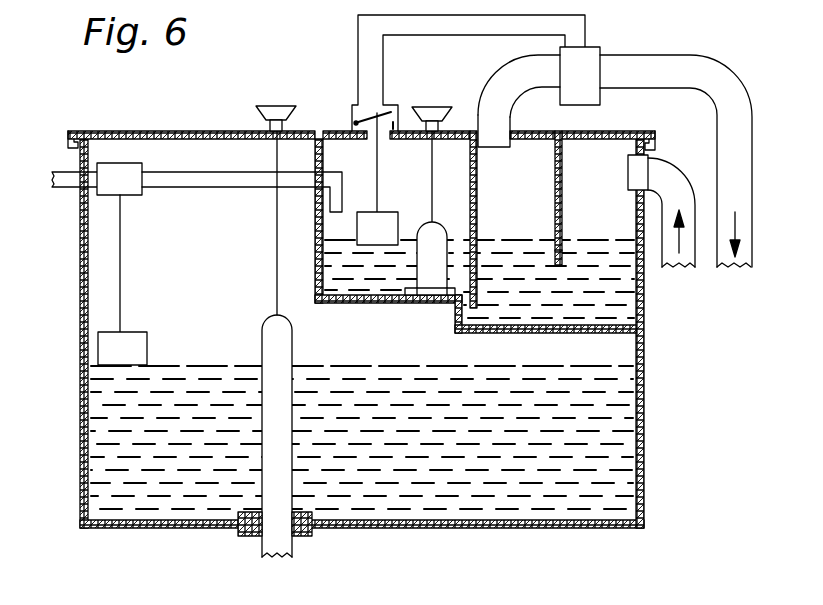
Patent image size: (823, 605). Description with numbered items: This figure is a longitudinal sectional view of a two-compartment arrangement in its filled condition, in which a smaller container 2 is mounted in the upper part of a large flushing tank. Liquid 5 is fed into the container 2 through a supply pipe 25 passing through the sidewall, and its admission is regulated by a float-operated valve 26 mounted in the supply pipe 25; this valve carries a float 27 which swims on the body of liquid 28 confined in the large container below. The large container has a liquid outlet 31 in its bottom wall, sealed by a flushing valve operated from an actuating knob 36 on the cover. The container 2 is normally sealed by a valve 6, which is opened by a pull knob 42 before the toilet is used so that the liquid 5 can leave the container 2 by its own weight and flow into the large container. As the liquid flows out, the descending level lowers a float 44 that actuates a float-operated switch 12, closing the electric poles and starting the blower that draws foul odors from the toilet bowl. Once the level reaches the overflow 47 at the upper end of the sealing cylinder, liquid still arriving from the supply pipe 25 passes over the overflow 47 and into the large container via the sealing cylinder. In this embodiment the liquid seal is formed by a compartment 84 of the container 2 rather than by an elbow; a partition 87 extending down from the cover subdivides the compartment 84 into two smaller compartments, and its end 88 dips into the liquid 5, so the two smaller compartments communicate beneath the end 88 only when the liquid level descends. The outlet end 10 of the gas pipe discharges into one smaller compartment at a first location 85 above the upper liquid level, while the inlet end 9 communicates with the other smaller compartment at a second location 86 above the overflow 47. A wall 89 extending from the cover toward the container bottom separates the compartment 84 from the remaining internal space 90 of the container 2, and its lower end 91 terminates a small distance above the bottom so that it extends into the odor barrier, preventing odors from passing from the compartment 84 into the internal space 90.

The container 2 is at (360, 303).
The liquid 5 is at (630, 302).
The valve 6 is at (425, 302).
The inlet end 9 is at (665, 175).
The outlet end 10 is at (493, 100).
The float-operated switch 12 is at (372, 115).
The supply pipe 25 is at (245, 182).
The float-operated valve 26 is at (110, 178).
The float 27 is at (125, 345).
The body of liquid 28 is at (173, 382).
The liquid outlet 31 is at (273, 522).
The actuating knob 36 is at (258, 111).
The pull knob 42 is at (432, 115).
The float 44 is at (357, 222).
The overflow 47 is at (428, 222).
The compartment 84 is at (632, 330).
The first location 85 is at (495, 148).
The second location 86 is at (628, 172).
The partition 87 is at (562, 205).
The end 88 is at (560, 268).
The wall 89 is at (478, 195).
The internal space 90 is at (418, 171).
The lower end 91 is at (473, 308).